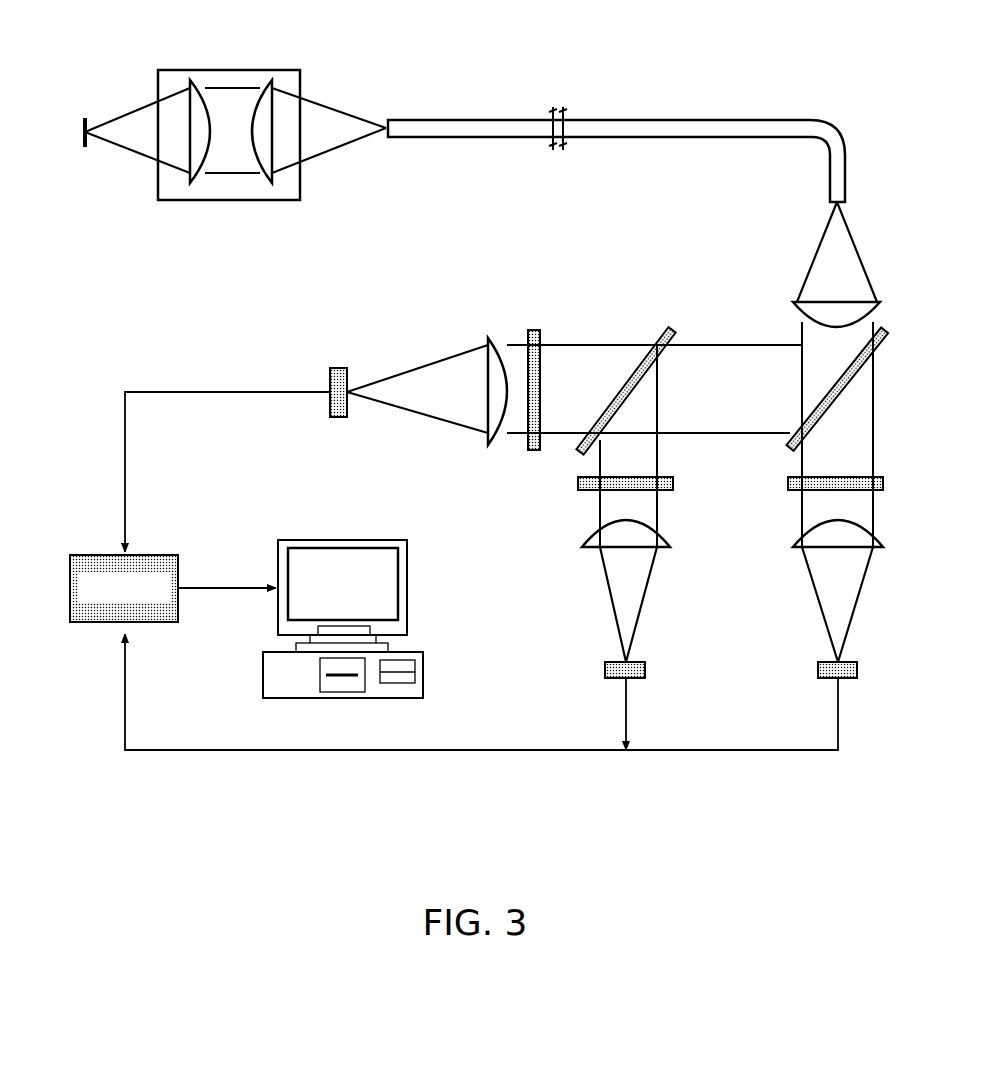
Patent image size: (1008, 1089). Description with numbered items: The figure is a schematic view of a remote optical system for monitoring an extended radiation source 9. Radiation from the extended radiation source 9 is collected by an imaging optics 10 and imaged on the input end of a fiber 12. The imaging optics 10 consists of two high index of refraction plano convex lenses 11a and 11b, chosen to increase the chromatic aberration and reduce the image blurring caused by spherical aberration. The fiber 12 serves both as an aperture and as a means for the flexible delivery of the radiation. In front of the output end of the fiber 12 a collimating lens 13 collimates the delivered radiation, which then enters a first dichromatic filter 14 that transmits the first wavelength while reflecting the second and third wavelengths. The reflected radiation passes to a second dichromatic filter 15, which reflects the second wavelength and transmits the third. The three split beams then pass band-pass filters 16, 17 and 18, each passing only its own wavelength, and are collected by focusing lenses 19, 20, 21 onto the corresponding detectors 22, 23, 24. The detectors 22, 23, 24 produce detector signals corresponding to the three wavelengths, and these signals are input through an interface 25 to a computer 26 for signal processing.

The extended radiation source 9 is at (78, 107).
The imaging optics 10 is at (152, 183).
The plano convex lens 11a is at (187, 66).
The plano convex lens 11b is at (260, 66).
The fiber 12 is at (661, 110).
The collimating lens 13 is at (789, 298).
The first dichromatic filter 14 is at (815, 400).
The second dichromatic filter 15 is at (600, 392).
The band-pass filter 16 is at (786, 500).
The band-pass filter 17 is at (672, 470).
The band-pass filter 18 is at (520, 467).
The focusing lens 19 is at (870, 520).
The focusing lens 20 is at (572, 548).
The focusing lens 21 is at (487, 333).
The detector 22 is at (818, 650).
The detector 23 is at (602, 680).
The detector 24 is at (330, 360).
The interface 25 is at (148, 545).
The computer 26 is at (328, 530).